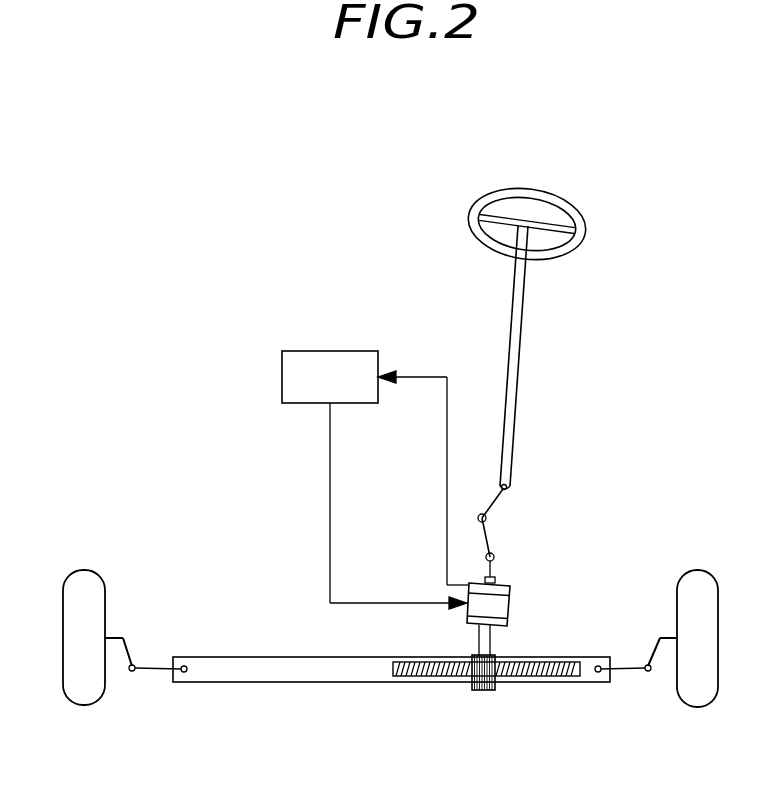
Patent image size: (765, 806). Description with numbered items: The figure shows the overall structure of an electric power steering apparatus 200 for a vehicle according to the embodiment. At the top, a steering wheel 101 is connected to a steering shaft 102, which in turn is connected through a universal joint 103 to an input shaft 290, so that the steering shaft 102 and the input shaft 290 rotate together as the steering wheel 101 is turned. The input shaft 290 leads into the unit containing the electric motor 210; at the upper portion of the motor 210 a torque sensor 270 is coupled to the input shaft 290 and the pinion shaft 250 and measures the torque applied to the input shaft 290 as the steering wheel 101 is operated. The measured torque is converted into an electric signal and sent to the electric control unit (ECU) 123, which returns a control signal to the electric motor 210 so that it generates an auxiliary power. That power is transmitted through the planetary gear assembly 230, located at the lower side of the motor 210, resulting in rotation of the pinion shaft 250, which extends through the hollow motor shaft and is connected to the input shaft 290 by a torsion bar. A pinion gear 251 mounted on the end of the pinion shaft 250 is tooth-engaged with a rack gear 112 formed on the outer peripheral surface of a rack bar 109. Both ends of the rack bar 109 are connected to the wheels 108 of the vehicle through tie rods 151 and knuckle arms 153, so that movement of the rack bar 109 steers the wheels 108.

The electric power steering apparatus 200 is at (161, 187).
The steering wheel 101 is at (468, 212).
The steering shaft 102 is at (525, 318).
The universal joint 103 is at (495, 503).
The electric control unit (ECU) 123 is at (337, 351).
The input shaft 290 is at (497, 580).
The torque sensor 270 is at (510, 588).
The electric motor 210 is at (503, 603).
The planetary gear assembly 230 is at (467, 618).
The pinion shaft 250 is at (490, 638).
The pinion gear 251 is at (477, 690).
The rack gear 112 is at (548, 675).
The rack bar 109 is at (290, 677).
The tie rod 151 is at (153, 667).
The knuckle arm 153 is at (668, 632).
The wheel 108 is at (90, 582).